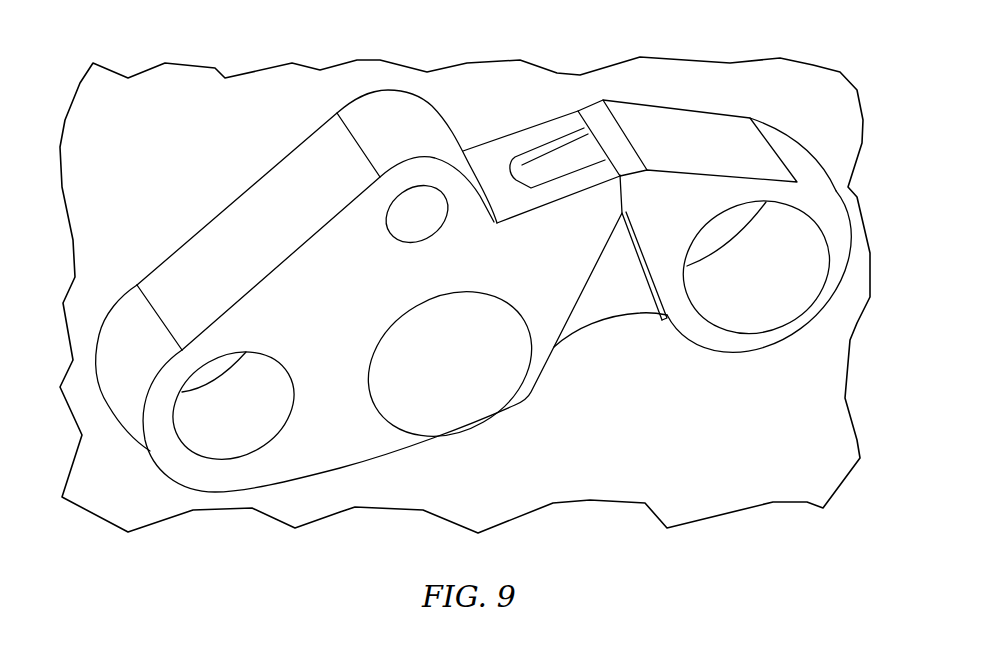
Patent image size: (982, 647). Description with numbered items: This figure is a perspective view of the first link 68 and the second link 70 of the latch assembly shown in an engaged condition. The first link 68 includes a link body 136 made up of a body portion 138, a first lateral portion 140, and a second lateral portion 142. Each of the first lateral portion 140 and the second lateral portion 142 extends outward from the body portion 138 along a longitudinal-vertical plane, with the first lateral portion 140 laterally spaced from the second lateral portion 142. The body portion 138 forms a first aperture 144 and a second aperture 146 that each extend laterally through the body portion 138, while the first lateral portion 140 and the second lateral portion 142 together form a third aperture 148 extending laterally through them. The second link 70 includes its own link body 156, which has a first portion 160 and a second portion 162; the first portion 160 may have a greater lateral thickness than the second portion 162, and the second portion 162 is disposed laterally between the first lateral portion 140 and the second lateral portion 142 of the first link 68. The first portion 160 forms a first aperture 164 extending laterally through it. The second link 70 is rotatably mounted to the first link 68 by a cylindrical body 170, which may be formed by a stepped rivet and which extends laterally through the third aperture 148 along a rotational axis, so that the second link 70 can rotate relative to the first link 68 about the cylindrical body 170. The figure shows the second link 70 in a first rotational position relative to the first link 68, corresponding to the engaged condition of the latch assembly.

The first link 68 is at (291, 173).
The second link 70 is at (727, 126).
The link body 136 is at (213, 236).
The body portion 138 is at (130, 315).
The first lateral portion 140 is at (533, 139).
The second lateral portion 142 is at (570, 185).
The first aperture 144 is at (228, 447).
The second aperture 146 is at (429, 226).
The third aperture 148 is at (514, 413).
The link body 156 is at (750, 161).
The first portion 160 is at (690, 117).
The second portion 162 is at (565, 162).
The first aperture 164 is at (758, 316).
The cylindrical body 170 is at (443, 415).